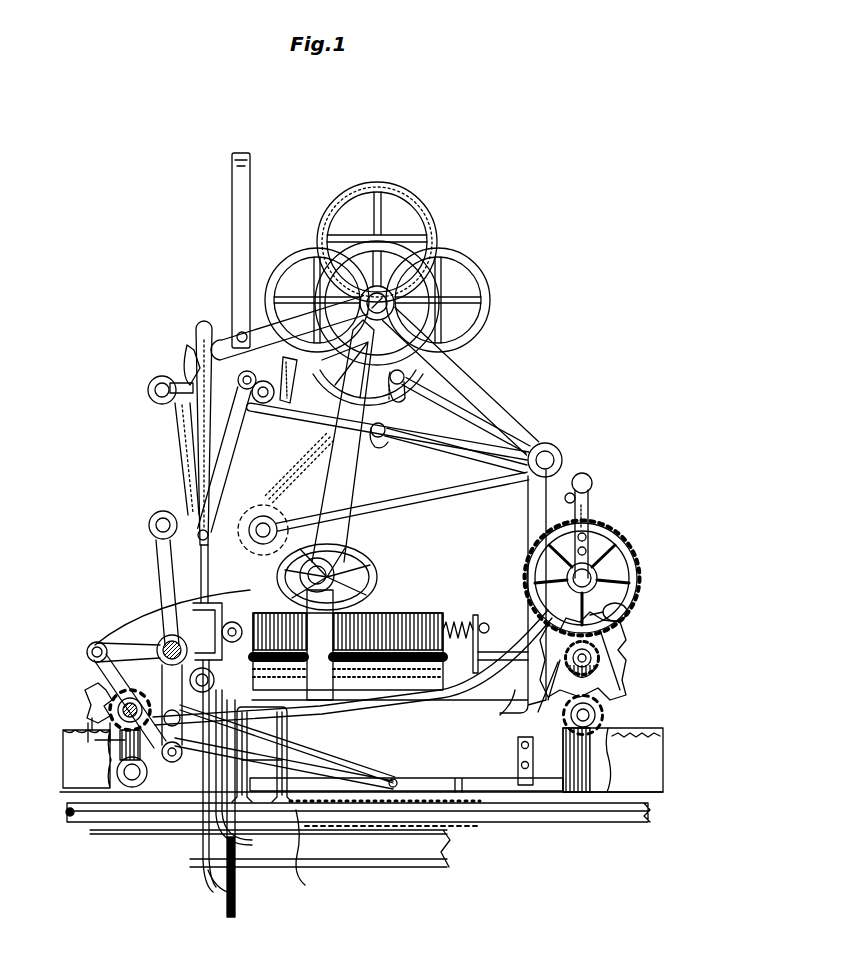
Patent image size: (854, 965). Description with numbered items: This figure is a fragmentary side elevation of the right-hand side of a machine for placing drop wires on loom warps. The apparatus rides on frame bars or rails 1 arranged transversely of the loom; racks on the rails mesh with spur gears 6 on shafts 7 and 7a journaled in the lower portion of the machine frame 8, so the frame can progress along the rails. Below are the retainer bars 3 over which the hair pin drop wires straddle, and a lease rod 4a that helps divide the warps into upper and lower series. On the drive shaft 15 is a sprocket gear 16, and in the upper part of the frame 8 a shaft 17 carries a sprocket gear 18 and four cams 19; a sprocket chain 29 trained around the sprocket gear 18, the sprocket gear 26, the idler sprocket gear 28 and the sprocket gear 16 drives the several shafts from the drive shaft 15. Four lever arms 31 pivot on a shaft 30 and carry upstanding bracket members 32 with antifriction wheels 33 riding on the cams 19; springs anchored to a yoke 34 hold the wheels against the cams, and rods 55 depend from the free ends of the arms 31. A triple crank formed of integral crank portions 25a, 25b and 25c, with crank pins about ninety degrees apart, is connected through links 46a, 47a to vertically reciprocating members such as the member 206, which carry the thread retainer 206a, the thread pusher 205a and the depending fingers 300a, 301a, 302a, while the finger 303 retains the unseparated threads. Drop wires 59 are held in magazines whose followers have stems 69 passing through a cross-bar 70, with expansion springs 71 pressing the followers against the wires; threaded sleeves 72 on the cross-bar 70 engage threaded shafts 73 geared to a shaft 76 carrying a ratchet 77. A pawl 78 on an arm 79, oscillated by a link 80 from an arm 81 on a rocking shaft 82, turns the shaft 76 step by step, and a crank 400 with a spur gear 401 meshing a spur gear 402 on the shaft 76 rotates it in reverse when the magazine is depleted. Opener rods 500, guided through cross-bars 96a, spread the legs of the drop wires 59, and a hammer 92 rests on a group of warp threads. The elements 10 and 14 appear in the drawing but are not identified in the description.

The frame bars or rails 1 is at (62, 742).
The bars 3 is at (453, 833).
The lease rod 4a is at (600, 822).
The spur gears 6 is at (100, 702).
The shaft 7 is at (84, 712).
The shaft 7a is at (605, 712).
The machine frame 8 is at (543, 507).
The bracket 10 is at (70, 731).
The post 14 is at (345, 592).
The drive shaft 15 is at (340, 555).
The sprocket gear 16 is at (355, 575).
The shaft 17 is at (386, 297).
The sprocket gear 18 is at (402, 226).
The cams 19 is at (392, 198).
The crank portion 25a is at (198, 352).
The crank portion 25b is at (185, 392).
The crank portion 25c is at (242, 430).
The sprocket gear 26 is at (190, 385).
The idler sprocket gear 28 is at (252, 556).
The sprocket belt or chain 29 is at (270, 475).
The shaft 30 is at (553, 452).
The lever arms 31 is at (453, 440).
The bracket members 32 is at (412, 424).
The antifriction wheels 33 is at (356, 441).
The yoke 34 is at (240, 200).
The link 46a is at (205, 467).
The link 47a is at (218, 485).
The rods 55 is at (158, 398).
The drop wires 59 is at (400, 612).
The stems 69 is at (487, 625).
The cross-bar or plate 70 is at (476, 618).
The expansion springs 71 is at (452, 620).
The internally threaded sleeves 72 is at (489, 651).
The threaded shafts 73 is at (506, 703).
The shaft 76 is at (600, 643).
The ratchet 77 is at (618, 664).
The pawl 78 is at (627, 612).
The arm 79 is at (544, 698).
The link 80 is at (323, 689).
The arm 81 is at (90, 660).
The shaft 82 is at (165, 643).
The hammer 92 is at (304, 880).
The cross-bars 96a is at (515, 775).
The thread pusher 205a is at (205, 862).
The member 206 is at (168, 573).
The thread retainer 206a is at (225, 880).
The finger 300a is at (350, 722).
The finger 301a is at (290, 750).
The finger 302a is at (200, 842).
The finger 303 is at (295, 735).
The crank 400 is at (600, 508).
The spur gear 401 is at (622, 536).
The spur gear 402 is at (600, 670).
The opener rods 500 is at (428, 776).